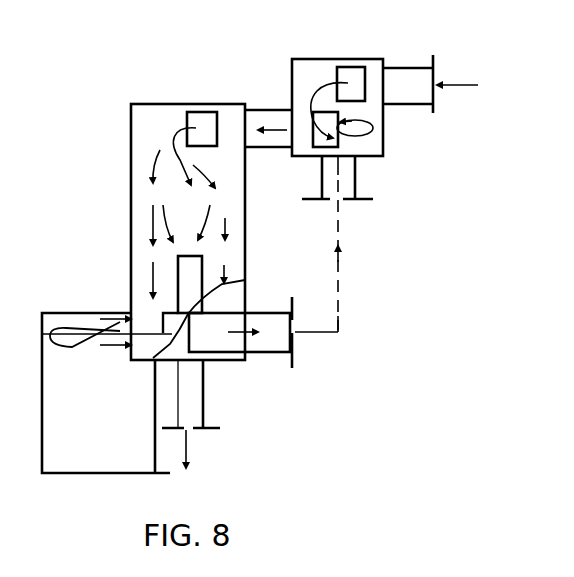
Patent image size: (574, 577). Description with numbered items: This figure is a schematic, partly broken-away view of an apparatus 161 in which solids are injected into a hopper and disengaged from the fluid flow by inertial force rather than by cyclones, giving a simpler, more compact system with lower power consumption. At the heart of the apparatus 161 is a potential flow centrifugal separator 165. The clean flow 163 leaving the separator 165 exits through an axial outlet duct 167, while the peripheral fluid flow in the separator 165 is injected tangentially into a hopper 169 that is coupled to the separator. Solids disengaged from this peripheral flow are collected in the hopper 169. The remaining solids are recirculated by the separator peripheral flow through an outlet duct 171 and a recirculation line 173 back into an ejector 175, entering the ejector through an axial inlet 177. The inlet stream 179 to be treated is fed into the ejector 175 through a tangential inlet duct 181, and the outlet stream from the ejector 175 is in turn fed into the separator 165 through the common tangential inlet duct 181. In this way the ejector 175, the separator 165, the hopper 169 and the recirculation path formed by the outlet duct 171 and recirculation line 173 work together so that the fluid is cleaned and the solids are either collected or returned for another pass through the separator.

The apparatus 161 is at (285, 450).
The clean flow 163 is at (187, 445).
The potential flow centrifugal separator 165 is at (138, 203).
The axial outlet duct 167 is at (178, 258).
The hopper 169 is at (102, 453).
The outlet duct 171 is at (265, 355).
The recirculation line 173 is at (318, 338).
The ejector 175 is at (312, 67).
The axial inlet 177 is at (321, 172).
The inlet stream 179 is at (460, 88).
The tangential inlet duct 181 is at (265, 120).